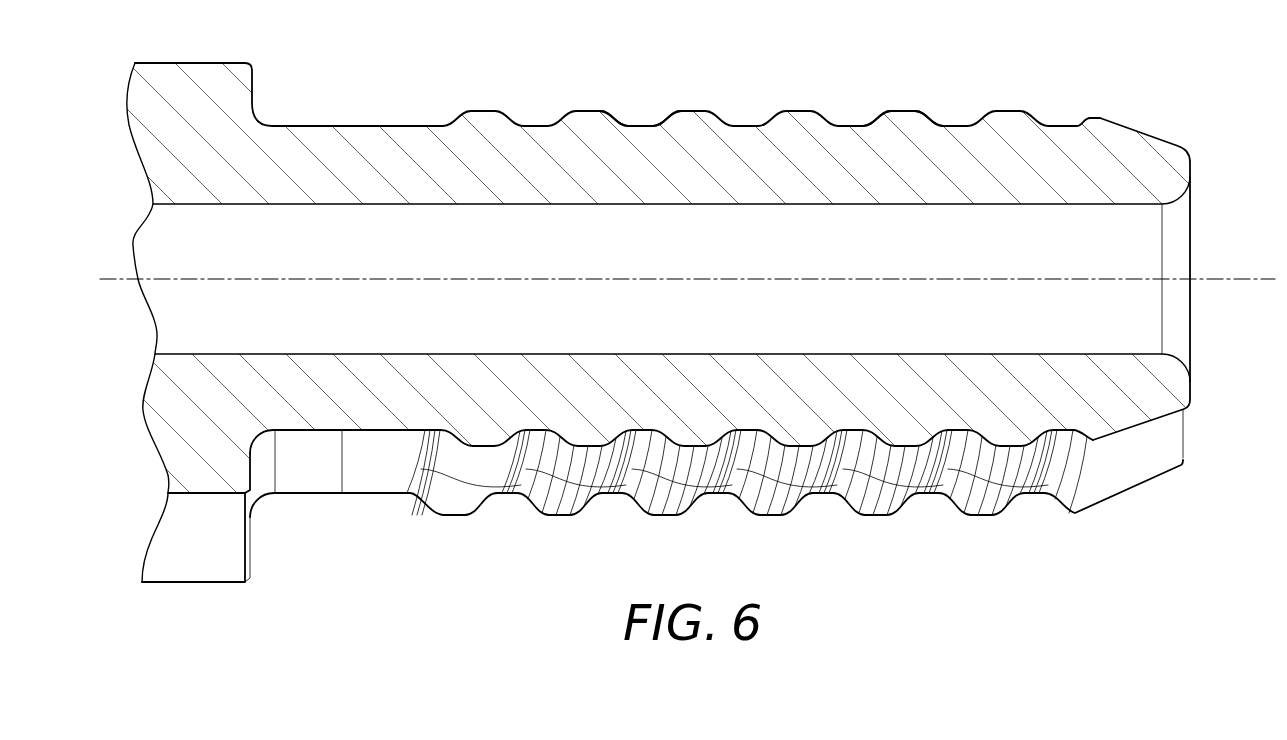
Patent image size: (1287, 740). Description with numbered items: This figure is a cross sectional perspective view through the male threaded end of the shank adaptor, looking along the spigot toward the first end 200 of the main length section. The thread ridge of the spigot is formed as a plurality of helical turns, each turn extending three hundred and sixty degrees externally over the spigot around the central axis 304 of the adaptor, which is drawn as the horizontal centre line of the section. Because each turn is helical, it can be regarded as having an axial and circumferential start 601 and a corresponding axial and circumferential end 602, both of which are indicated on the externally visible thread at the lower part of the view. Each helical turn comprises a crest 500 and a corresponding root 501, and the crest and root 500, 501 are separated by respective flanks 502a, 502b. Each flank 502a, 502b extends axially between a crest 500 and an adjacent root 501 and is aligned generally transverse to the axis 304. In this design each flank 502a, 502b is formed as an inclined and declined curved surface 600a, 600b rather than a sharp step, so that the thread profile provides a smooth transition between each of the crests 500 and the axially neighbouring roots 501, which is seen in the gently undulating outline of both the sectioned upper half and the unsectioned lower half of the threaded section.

The first end 200 is at (1191, 384).
The central axis 304 is at (1238, 279).
The crest 500 is at (905, 110).
The root 501 is at (638, 126).
The flank 502a is at (872, 113).
The flank 502b is at (938, 115).
The inclined curved surface 600a is at (648, 500).
The declined curved surface 600b is at (707, 495).
The axial and circumferential end 602 is at (817, 482).
The axial and circumferential start 601 is at (920, 482).